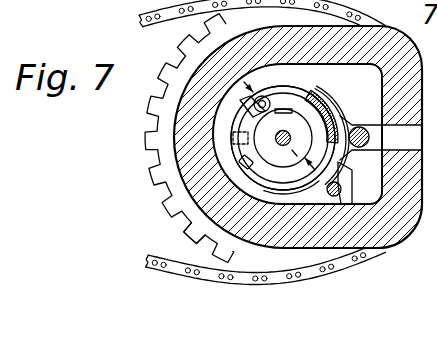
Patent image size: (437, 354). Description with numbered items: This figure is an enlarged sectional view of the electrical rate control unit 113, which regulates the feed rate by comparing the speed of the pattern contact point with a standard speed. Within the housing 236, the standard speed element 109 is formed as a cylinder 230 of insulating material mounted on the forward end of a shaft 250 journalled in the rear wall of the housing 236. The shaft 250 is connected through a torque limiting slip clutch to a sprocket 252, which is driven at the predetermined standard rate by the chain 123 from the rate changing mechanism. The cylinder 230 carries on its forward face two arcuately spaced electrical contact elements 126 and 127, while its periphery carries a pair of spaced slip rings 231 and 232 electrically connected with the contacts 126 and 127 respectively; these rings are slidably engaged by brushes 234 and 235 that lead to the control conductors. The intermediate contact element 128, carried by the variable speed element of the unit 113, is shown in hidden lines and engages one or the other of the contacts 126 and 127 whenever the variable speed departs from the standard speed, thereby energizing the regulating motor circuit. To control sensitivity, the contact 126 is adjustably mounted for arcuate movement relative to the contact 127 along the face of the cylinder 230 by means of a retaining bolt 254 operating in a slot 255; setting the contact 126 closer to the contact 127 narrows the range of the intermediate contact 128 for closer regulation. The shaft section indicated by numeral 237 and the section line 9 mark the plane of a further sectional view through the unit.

The section line 9— 9 is at (275, 130).
The standard speed element 109 is at (222, 148).
The electrical rate control unit 113 is at (378, 138).
The chain 123 is at (185, 268).
The electrical contact element 126 is at (283, 138).
The electrical contact element 127 is at (244, 170).
The intermediate contact element 128 is at (233, 138).
The insulating cylinder 230 is at (283, 138).
The slip ring 231 is at (320, 94).
The slip ring 232 is at (272, 186).
The brush 234 is at (337, 110).
The brush 235 is at (343, 168).
The housing 236 is at (163, 196).
The shaft 237 is at (281, 142).
The shaft 250 is at (283, 138).
The sprocket 252 is at (191, 223).
The retaining bolt 254 is at (263, 97).
The slot 255 is at (308, 92).